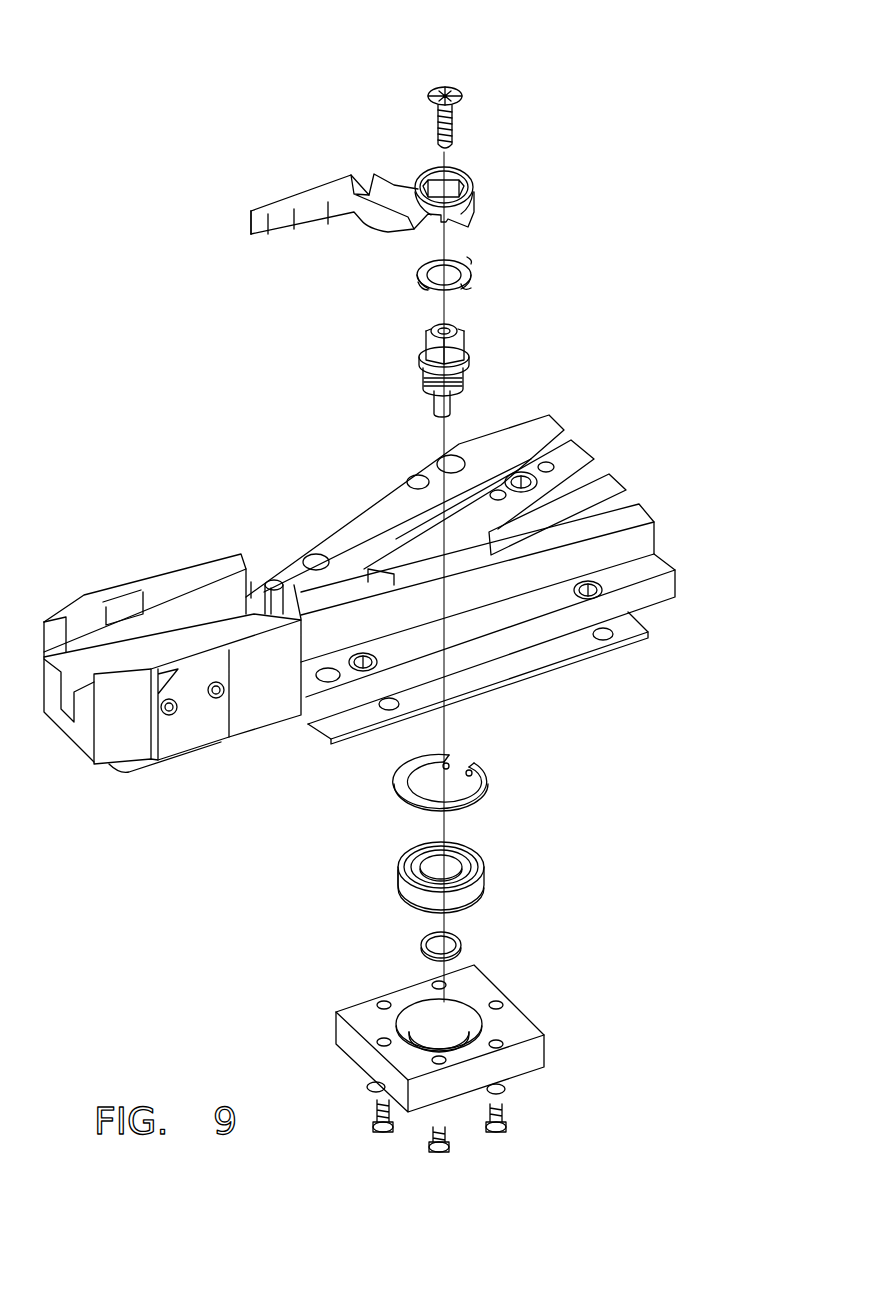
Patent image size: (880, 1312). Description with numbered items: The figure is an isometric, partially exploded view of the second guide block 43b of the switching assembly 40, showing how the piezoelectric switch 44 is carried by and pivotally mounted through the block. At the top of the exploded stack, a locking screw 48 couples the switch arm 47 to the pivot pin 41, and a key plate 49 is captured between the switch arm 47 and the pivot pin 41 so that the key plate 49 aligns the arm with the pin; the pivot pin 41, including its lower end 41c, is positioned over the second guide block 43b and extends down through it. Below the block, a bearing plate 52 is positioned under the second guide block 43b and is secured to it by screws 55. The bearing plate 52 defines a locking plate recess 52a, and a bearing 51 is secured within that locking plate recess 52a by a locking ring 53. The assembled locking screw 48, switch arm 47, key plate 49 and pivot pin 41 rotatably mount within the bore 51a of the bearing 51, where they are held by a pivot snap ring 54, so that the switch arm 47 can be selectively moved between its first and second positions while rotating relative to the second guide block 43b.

The piezoelectric switch 44 is at (446, 62).
The cutting head assembly 40 is at (235, 165).
The locking screw 48 is at (453, 120).
The switch arm 47 is at (472, 200).
The key plate 49 is at (468, 266).
The pivot pin 41 is at (446, 384).
The bushing pin 41c is at (437, 403).
The second guide block 43b is at (623, 542).
The locking ring 53 is at (478, 765).
The bore 51a is at (462, 858).
The bearing 51 is at (473, 884).
The pivot snap ring 54 is at (461, 943).
The locking plate recess 52a is at (420, 1008).
The bearing plate 52 is at (527, 1055).
The screws 55 is at (503, 1117).